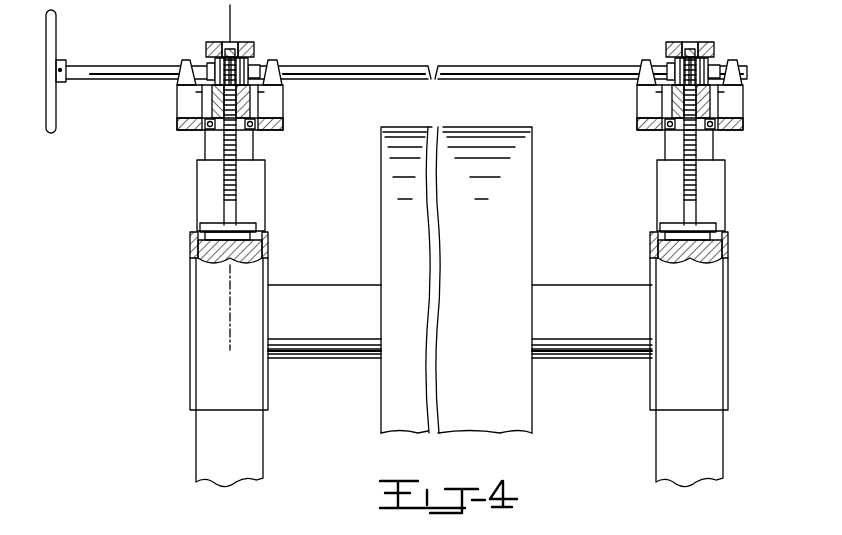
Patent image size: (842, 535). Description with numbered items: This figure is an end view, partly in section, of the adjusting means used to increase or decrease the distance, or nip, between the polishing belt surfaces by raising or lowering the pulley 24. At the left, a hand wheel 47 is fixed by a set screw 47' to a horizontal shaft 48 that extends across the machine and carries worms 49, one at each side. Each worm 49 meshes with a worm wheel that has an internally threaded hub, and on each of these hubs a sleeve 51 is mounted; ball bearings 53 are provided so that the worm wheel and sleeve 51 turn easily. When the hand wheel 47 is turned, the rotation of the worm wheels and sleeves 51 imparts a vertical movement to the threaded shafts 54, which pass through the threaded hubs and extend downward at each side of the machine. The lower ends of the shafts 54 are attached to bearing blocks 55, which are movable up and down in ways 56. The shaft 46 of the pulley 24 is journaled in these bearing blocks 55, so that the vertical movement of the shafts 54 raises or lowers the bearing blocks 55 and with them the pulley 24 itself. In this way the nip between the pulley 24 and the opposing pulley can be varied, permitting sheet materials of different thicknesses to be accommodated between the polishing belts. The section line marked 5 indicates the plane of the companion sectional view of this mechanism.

The hand wheel 47 is at (63, 71).
The set screw 47' is at (78, 57).
The shaft 48 is at (122, 68).
The worm 49 is at (237, 72).
The sleeve 51 is at (247, 105).
The ball bearing 53 is at (255, 130).
The shaft 54 is at (238, 192).
The bearing block 55 is at (205, 292).
The way 56 is at (207, 203).
The pulley 24 is at (524, 234).
The shaft 46 is at (560, 293).
The section line of FIG. 5 is at (229, 16).